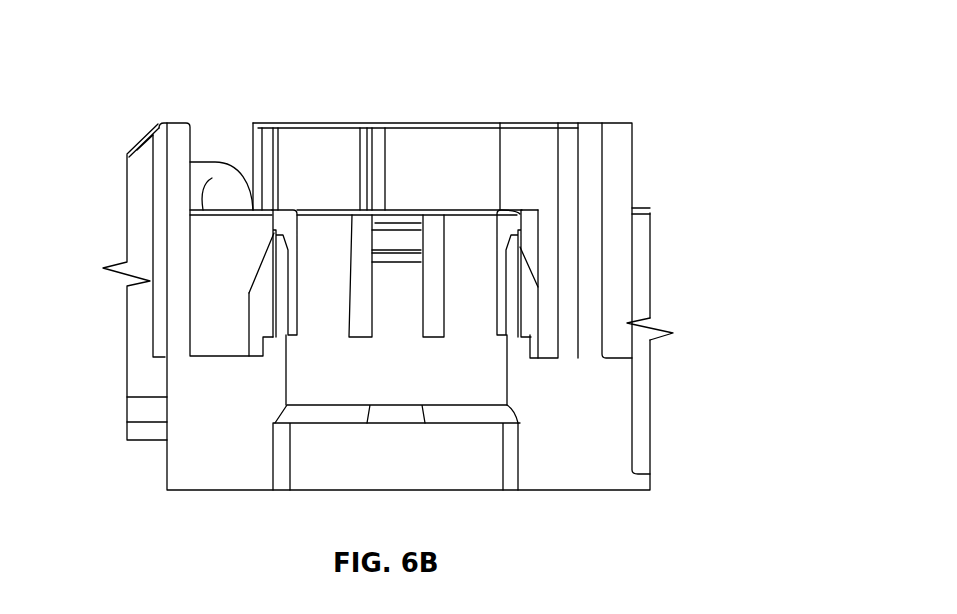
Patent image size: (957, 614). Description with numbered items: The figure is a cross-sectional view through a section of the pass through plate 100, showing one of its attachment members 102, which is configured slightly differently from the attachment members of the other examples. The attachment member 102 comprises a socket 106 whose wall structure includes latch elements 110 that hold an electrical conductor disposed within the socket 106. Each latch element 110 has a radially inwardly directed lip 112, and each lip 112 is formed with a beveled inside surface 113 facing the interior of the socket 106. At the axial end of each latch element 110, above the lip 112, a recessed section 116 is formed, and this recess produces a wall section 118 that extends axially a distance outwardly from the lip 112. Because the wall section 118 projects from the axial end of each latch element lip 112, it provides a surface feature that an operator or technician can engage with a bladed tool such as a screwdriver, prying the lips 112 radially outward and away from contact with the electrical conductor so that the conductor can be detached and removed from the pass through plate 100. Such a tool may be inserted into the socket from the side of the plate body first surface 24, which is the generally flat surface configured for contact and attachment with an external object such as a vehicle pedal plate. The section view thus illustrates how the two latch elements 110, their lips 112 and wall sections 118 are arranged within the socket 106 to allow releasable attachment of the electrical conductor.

The pass through plate 100 is at (656, 108).
The first surface 24 is at (610, 490).
The attachment member 102 is at (543, 302).
The socket 106 is at (249, 293).
The latch element 110 is at (472, 263).
The lip 112 is at (390, 253).
The beveled inside surface 113 is at (383, 237).
The recessed section 116 is at (293, 200).
The wall section 118 is at (280, 232).